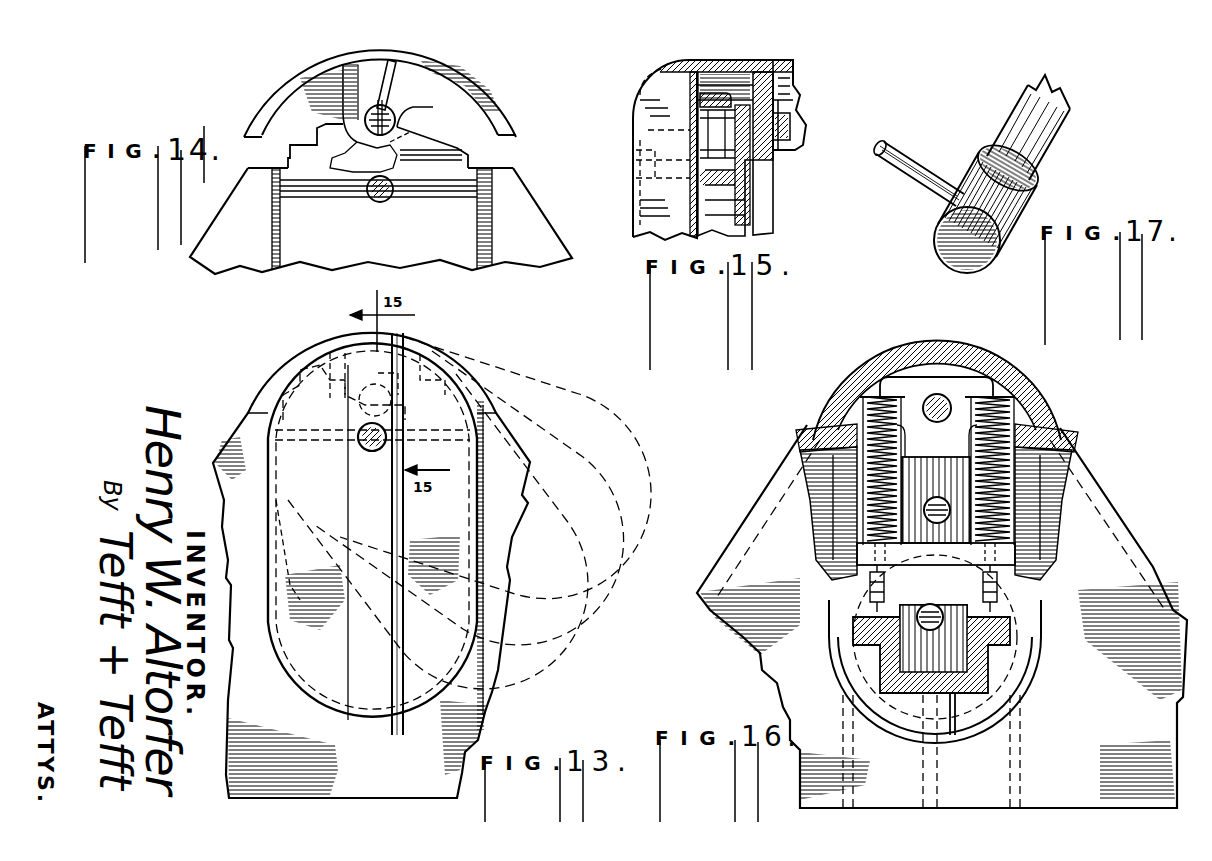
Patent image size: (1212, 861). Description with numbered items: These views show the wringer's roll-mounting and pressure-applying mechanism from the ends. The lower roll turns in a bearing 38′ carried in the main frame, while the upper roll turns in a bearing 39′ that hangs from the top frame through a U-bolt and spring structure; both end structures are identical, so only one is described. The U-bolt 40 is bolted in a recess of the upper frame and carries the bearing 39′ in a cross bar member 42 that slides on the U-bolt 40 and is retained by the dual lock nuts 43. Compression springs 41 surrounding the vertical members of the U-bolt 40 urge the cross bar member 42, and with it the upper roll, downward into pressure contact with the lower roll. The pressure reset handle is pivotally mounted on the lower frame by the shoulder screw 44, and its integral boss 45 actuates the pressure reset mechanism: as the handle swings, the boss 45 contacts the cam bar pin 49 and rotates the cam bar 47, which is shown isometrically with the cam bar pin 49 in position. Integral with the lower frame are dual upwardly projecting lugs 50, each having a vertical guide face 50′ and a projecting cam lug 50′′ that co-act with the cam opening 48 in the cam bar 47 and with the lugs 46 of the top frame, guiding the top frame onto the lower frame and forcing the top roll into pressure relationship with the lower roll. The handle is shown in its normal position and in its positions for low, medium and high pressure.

In FIG. 16, the bearing 38′ is at (1010, 614).
In FIG. 16, the bearing 39′ is at (968, 473).
In FIG. 16, the U-bolt 40 is at (950, 380).
In FIG. 16, the compression springs 41 is at (870, 415).
In FIG. 16, the cross bar member 42 is at (1018, 557).
In FIG. 16, the dual lock nuts 43 is at (868, 585).
In FIG. 13, the shoulder screw 44 is at (364, 446).
In FIG. 15, the shoulder screw 44 is at (636, 152).
In FIG. 13, the boss 45 is at (428, 358).
In FIG. 15, the boss 45 is at (712, 95).
In FIG. 14, the lugs 46 is at (418, 128).
In FIG. 15, the lugs 46 is at (785, 88).
In FIG. 14, the cam bar 47 is at (380, 107).
In FIG. 15, the cam bar 47 is at (783, 143).
In FIG. 16, the cam bar 47 is at (934, 398).
In FIG. 17, the cam bar 47 is at (1057, 133).
In FIG. 14, the cam opening 48 is at (390, 112).
In FIG. 17, the cam opening 48 is at (1030, 193).
In FIG. 14, the cam bar pin 49 is at (398, 66).
In FIG. 17, the cam bar pin 49 is at (912, 162).
In FIG. 14, the upwardly projecting lugs 50 is at (461, 149).
In FIG. 14, the vertical guide face 50′ is at (331, 150).
In FIG. 14, the projecting cam lug 50′′ is at (363, 157).